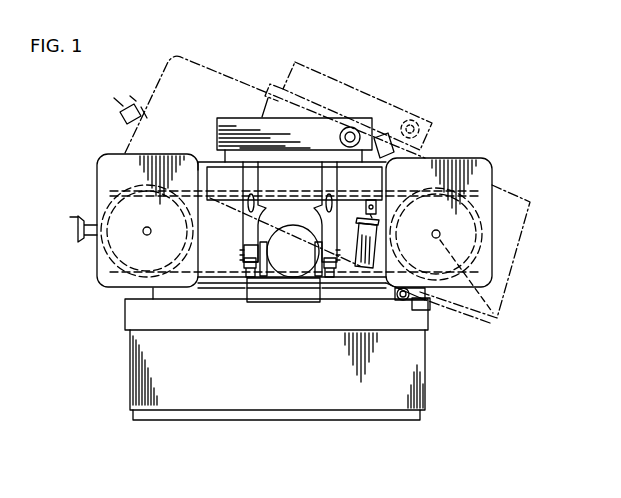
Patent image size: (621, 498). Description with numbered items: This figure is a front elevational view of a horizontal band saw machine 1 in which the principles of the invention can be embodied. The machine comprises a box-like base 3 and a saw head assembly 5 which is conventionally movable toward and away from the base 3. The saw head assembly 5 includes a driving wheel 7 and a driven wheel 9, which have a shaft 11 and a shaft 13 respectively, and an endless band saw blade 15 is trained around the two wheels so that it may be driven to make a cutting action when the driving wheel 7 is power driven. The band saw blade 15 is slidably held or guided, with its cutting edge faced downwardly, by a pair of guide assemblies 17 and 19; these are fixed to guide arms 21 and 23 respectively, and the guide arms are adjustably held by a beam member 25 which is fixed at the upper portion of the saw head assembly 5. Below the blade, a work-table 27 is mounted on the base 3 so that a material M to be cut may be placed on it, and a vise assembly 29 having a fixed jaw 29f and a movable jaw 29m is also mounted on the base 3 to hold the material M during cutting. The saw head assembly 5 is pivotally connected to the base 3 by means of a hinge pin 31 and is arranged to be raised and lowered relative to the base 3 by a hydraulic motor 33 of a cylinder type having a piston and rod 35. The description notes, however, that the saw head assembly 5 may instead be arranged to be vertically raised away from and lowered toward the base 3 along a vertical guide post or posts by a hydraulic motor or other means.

The horizontal band saw machine 1 is at (102, 347).
The base 3 is at (208, 403).
The saw head assembly 5 is at (446, 145).
The driving wheel 7 is at (478, 256).
The driven wheel 9 is at (114, 197).
The shaft 11 is at (506, 314).
The shaft 13 is at (144, 234).
The band saw blade 15 is at (205, 283).
The guide assembly 17 is at (360, 268).
The guide assembly 19 is at (245, 277).
The guide arm 21 is at (323, 162).
The guide arm 23 is at (250, 167).
The beam member 25 is at (285, 175).
The work-table 27 is at (288, 286).
The vise assembly 29 is at (250, 257).
The movable jaw 29m is at (258, 277).
The fixed jaw 29f is at (315, 277).
The hinge pin 31 is at (423, 293).
The hydraulic motor 33 is at (367, 270).
The piston and rod 35 is at (373, 212).
The material M is at (288, 243).